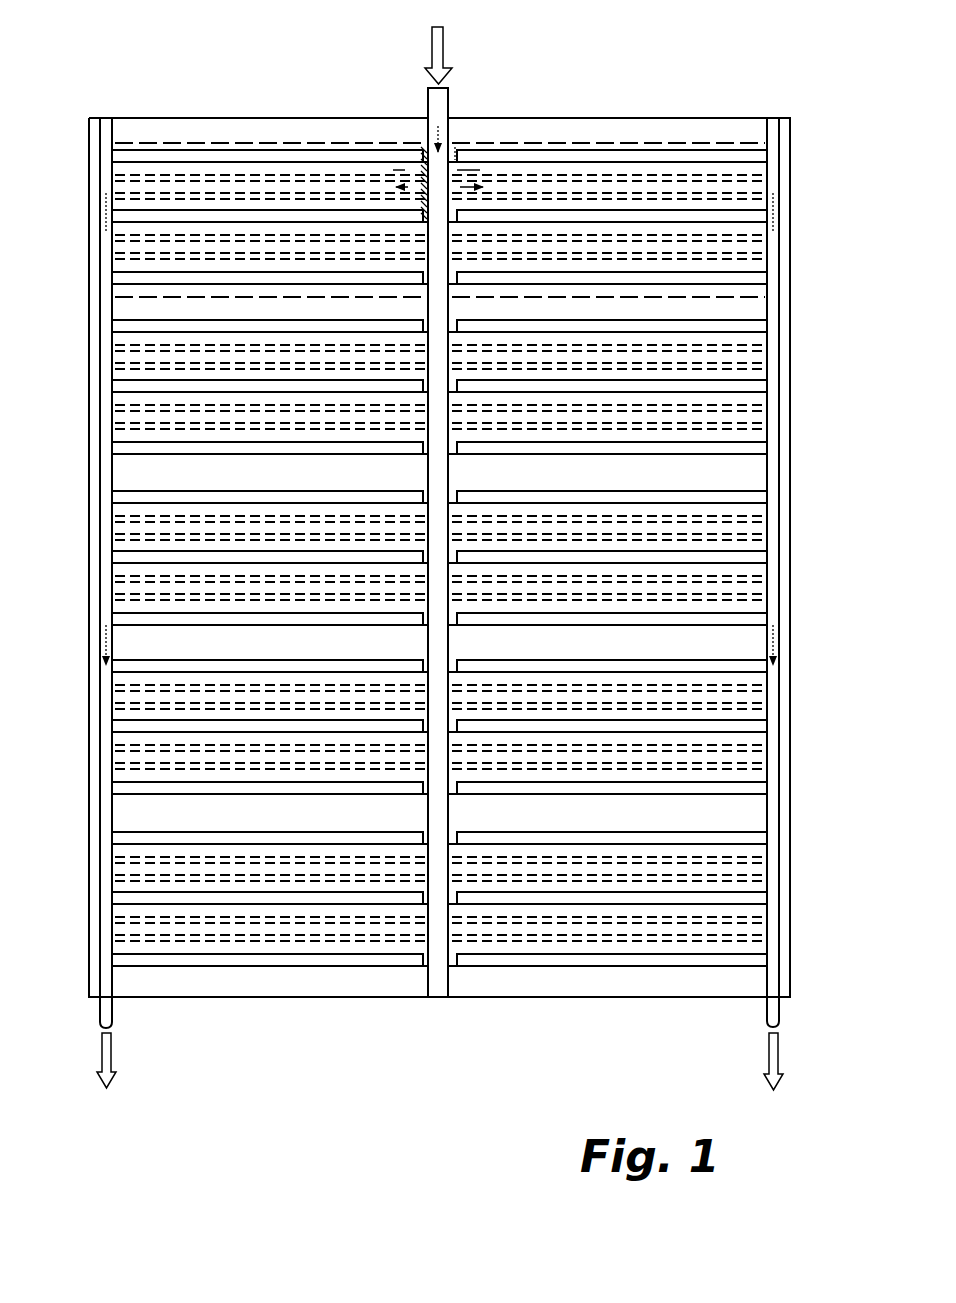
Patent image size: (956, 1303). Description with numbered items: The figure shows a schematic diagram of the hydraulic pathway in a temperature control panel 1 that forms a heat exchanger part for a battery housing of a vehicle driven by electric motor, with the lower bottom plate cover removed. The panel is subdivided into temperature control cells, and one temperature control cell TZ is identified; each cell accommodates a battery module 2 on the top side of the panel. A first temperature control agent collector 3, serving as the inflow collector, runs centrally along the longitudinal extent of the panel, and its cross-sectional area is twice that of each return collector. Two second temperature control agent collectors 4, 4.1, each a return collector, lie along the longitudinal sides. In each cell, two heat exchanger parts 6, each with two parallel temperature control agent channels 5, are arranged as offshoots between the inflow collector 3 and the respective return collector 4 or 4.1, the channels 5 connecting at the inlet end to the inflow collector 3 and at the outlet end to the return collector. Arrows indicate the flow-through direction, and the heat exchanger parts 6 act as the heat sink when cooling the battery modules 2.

The temperature control panel 1 is at (265, 1020).
The battery module 2 is at (165, 317).
The first temperature control agent collector 3 is at (456, 141).
The second temperature control agent collector 4 is at (782, 175).
The second temperature control agent collector 4.1 is at (102, 177).
The temperature control agent channel 5 is at (293, 186).
The heat exchanger part 6 is at (205, 162).
The temperature control cell TZ is at (375, 140).